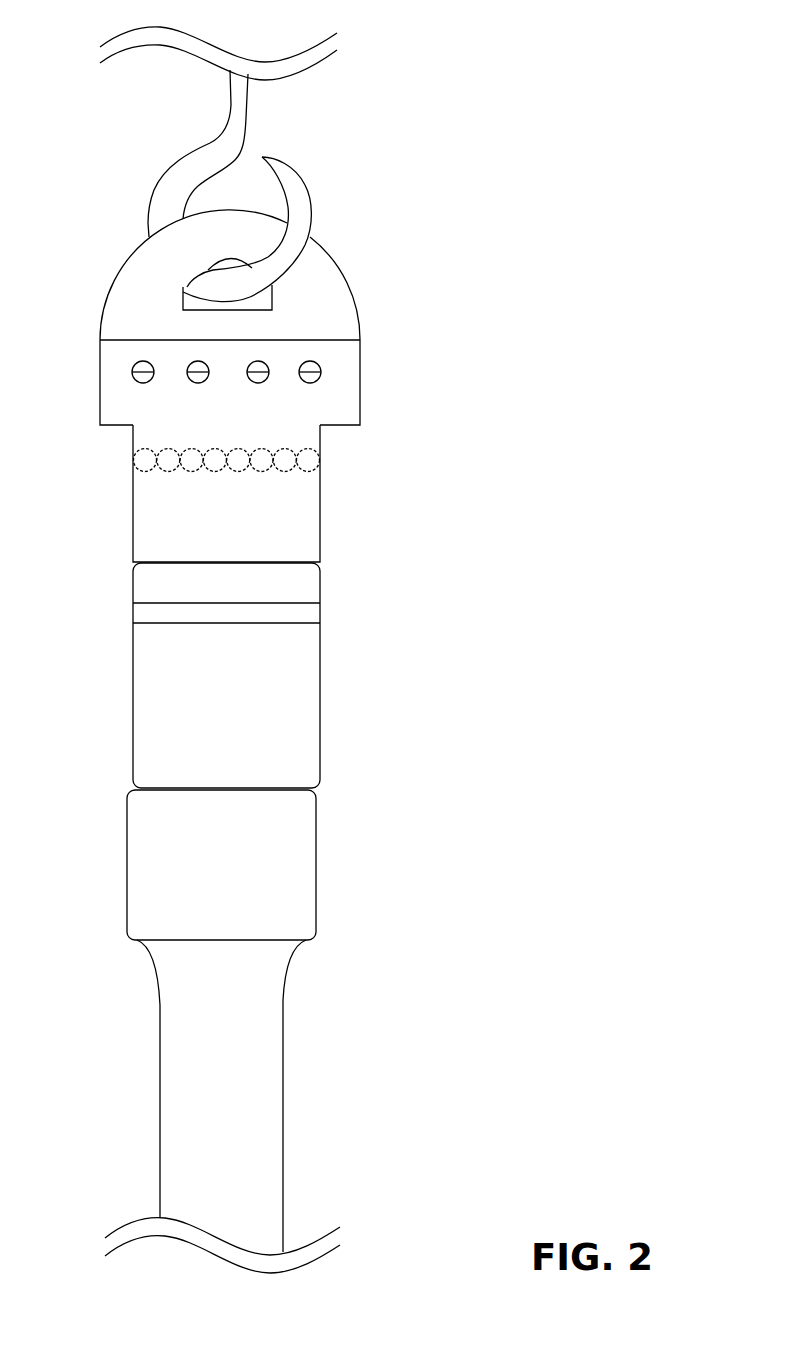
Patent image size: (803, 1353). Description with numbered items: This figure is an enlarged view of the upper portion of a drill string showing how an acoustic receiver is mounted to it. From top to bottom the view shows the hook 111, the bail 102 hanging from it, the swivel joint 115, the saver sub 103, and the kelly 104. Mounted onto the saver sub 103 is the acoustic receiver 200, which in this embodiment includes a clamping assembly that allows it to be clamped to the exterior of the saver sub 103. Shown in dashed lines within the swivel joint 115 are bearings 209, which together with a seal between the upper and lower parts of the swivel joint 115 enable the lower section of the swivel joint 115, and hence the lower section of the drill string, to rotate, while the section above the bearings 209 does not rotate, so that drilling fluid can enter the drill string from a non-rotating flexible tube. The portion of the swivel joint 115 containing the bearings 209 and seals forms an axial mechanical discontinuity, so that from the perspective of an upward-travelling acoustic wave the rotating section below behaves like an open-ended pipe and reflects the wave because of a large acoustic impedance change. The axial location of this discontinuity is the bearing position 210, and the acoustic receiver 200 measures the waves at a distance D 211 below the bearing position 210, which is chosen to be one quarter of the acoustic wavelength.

The hook 111 is at (162, 219).
The bail 102 is at (162, 322).
The swivel joint 115 is at (190, 545).
The bearings 209 is at (171, 437).
The bearing position 210 is at (325, 460).
The saver sub 103 is at (200, 771).
The acoustic receiver 200 is at (182, 613).
The distance D 211 is at (320, 617).
The kelly 104 is at (200, 904).